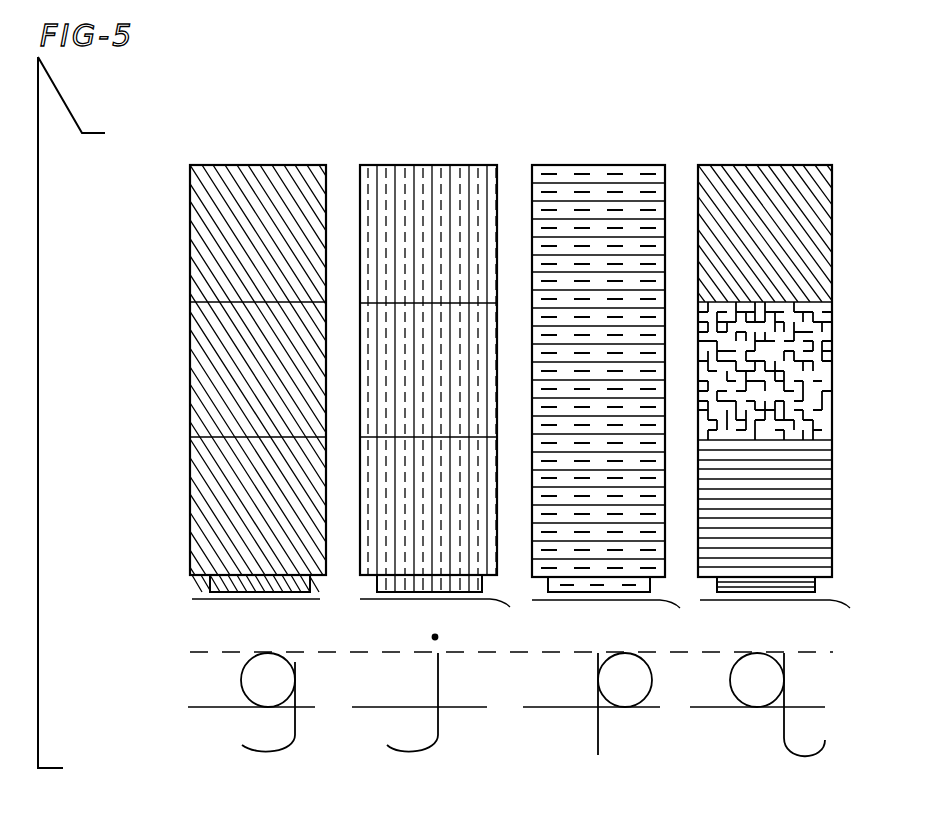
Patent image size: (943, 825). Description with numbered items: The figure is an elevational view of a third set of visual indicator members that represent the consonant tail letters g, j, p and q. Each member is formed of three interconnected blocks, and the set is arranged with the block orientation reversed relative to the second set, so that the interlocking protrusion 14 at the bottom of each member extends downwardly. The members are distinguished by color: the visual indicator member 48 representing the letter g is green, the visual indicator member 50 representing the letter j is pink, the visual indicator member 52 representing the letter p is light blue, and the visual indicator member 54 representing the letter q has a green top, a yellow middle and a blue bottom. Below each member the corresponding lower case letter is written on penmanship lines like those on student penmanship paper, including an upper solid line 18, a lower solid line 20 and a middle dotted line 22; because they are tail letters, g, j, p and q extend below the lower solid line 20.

The interlocking protrusion 14 is at (841, 624).
The upper solid line 18 is at (192, 599).
The lower solid line 20 is at (188, 707).
The middle dotted line 22 is at (188, 654).
The visual indicator member 48 is at (307, 165).
The visual indicator member 50 is at (482, 165).
The visual indicator member 52 is at (645, 165).
The visual indicator member 54 is at (785, 165).